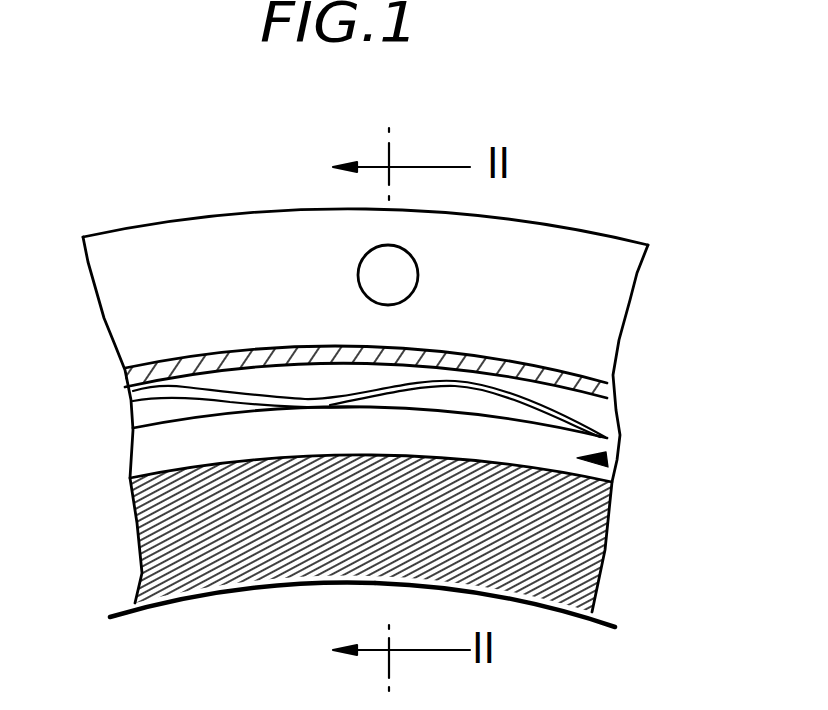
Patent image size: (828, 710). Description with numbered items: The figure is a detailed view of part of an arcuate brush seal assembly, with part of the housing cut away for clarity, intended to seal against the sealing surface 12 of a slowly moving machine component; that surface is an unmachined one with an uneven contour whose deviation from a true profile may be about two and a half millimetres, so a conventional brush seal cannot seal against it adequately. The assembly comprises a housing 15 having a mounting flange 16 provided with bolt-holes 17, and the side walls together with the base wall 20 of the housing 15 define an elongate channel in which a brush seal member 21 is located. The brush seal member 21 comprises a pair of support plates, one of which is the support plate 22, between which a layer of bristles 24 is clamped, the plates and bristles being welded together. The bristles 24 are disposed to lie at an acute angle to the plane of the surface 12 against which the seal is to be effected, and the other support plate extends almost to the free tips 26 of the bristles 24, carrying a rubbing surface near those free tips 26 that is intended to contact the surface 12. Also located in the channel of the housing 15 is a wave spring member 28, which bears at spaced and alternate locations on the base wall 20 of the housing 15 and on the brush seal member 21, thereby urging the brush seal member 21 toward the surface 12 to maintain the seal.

The sealing surface 12 is at (607, 617).
The housing 15 is at (607, 212).
The mounting flange 16 is at (280, 238).
The bolt-holes 17 is at (408, 277).
The base wall 20 is at (567, 370).
The brush seal member 21 is at (604, 460).
The support plate 22 is at (180, 450).
The bristles 24 is at (570, 538).
The free tips 26 is at (260, 592).
The wave spring member 28 is at (215, 388).